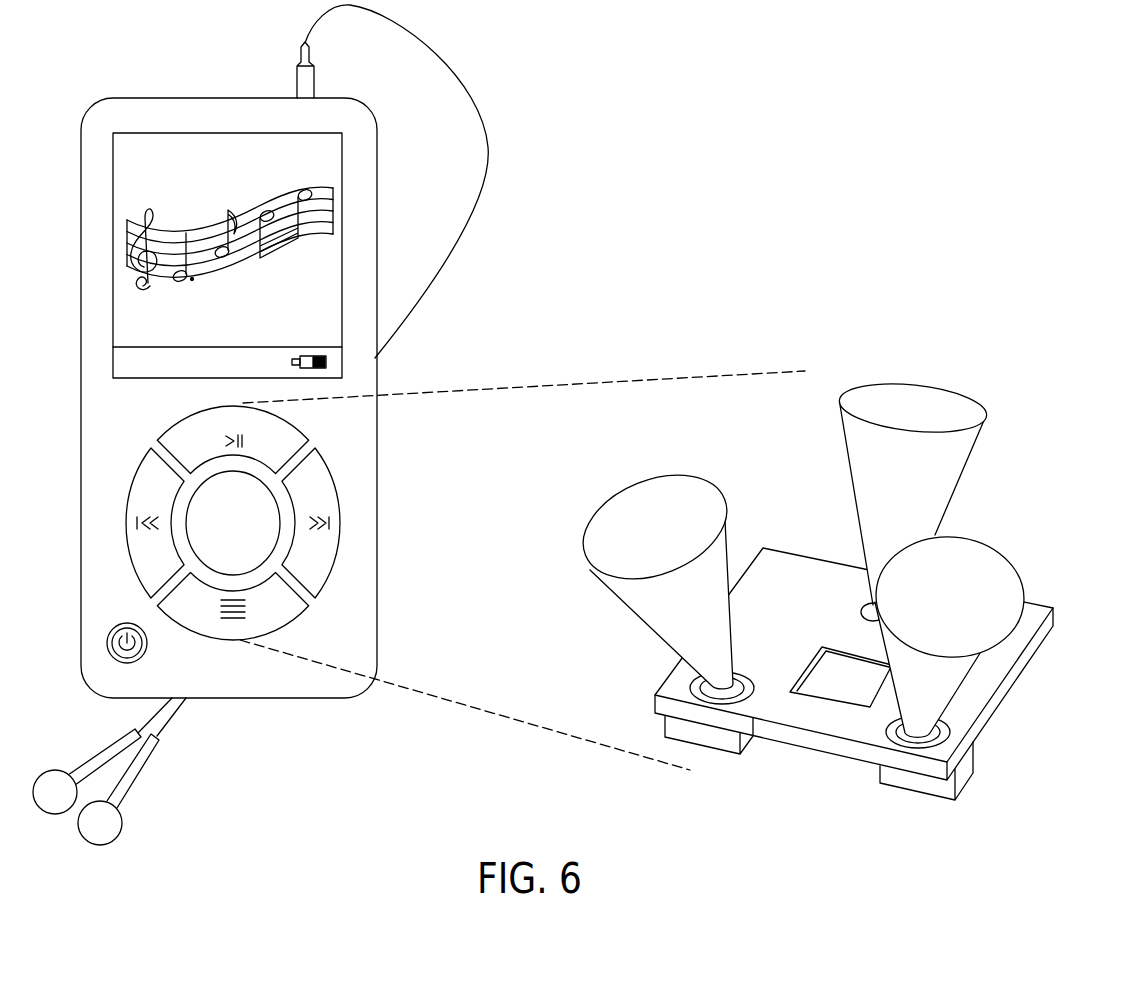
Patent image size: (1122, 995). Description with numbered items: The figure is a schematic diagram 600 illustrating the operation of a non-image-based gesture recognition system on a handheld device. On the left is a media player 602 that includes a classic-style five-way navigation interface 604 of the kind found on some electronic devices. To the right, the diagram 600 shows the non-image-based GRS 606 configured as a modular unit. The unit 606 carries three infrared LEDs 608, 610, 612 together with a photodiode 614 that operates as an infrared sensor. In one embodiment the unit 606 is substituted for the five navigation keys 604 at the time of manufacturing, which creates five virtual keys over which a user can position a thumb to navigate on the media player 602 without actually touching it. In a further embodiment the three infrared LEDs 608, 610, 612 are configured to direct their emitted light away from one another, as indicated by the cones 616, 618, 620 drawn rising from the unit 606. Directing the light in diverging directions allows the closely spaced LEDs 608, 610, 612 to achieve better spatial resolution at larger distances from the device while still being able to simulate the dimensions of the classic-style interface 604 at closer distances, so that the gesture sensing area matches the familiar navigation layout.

The schematic diagram 600 is at (988, 163).
The media player 602 is at (150, 98).
The classic-style 5-way navigation interface 604 is at (153, 452).
The non-image-based GRS 606 is at (1008, 500).
The infrared LED 608 is at (868, 606).
The infrared LED 610 is at (745, 672).
The infrared LED 612 is at (888, 732).
The photodiode 614 is at (813, 661).
The cone 616 is at (980, 403).
The cone 618 is at (721, 486).
The cone 620 is at (1019, 581).